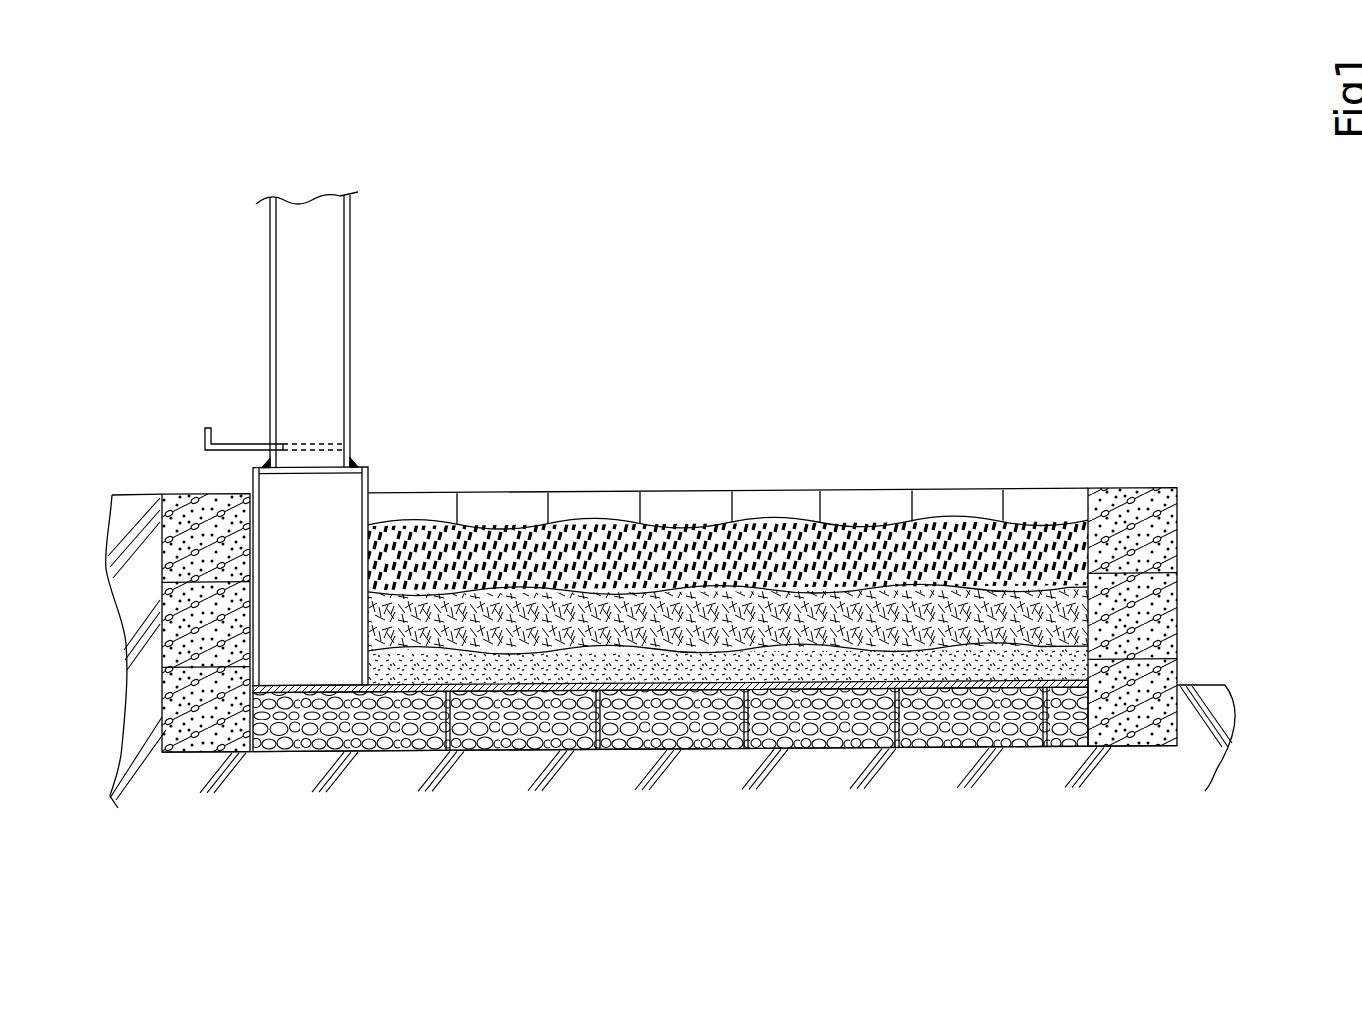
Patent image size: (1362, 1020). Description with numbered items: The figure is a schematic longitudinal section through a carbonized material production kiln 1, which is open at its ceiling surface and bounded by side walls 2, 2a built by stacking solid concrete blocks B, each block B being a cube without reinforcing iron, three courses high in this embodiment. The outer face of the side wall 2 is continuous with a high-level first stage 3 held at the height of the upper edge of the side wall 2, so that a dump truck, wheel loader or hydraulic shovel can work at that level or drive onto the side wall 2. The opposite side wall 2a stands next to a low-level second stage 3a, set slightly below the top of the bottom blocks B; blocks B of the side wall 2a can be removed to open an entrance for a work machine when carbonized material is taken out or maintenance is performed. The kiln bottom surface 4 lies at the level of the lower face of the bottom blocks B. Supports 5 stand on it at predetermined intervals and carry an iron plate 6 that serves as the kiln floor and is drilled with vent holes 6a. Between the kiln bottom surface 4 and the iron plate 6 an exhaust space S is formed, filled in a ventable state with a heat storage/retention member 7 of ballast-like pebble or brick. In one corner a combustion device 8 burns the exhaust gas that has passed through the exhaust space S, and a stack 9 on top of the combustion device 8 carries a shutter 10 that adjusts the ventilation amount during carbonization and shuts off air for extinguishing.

The carbonized material production kiln 1 is at (772, 430).
The side wall 2 is at (187, 492).
The side wall 2a is at (1141, 487).
The first stage 3 is at (128, 494).
The second stage 3a is at (1200, 685).
The kiln bottom surface 4 is at (932, 749).
The support 5 is at (450, 750).
The iron plate 6 is at (665, 694).
The vent hole 6a is at (442, 691).
The heat storage/retention member 7 is at (561, 735).
The combustion device 8 is at (289, 632).
The stack 9 is at (332, 323).
The shutter 10 is at (236, 446).
The block B is at (757, 508).
The exhaust space S is at (998, 722).